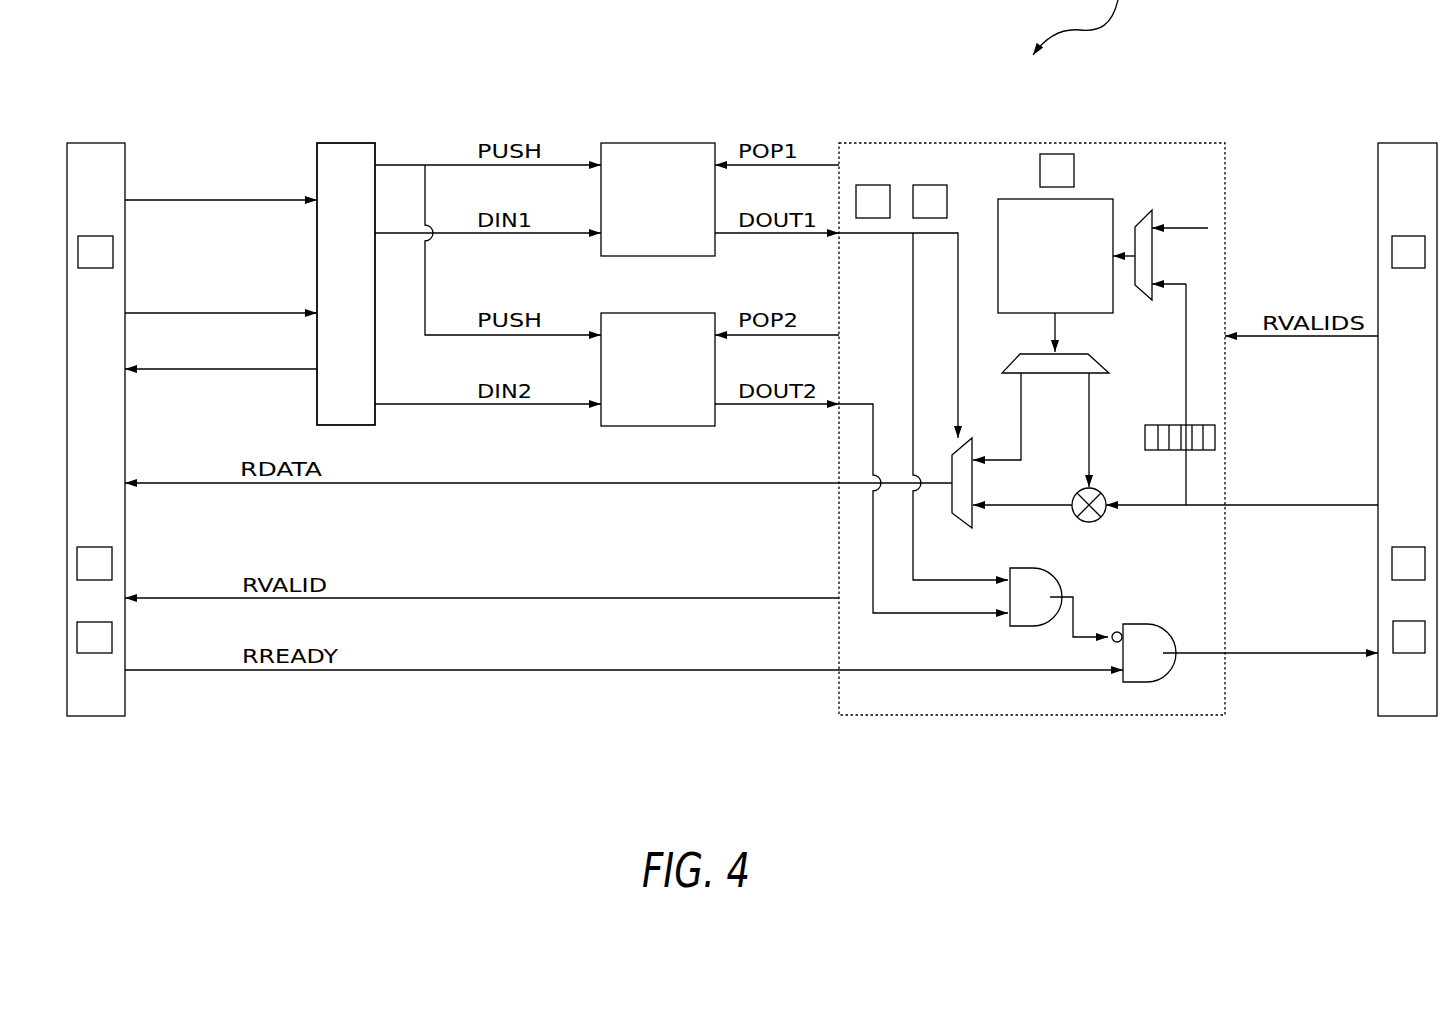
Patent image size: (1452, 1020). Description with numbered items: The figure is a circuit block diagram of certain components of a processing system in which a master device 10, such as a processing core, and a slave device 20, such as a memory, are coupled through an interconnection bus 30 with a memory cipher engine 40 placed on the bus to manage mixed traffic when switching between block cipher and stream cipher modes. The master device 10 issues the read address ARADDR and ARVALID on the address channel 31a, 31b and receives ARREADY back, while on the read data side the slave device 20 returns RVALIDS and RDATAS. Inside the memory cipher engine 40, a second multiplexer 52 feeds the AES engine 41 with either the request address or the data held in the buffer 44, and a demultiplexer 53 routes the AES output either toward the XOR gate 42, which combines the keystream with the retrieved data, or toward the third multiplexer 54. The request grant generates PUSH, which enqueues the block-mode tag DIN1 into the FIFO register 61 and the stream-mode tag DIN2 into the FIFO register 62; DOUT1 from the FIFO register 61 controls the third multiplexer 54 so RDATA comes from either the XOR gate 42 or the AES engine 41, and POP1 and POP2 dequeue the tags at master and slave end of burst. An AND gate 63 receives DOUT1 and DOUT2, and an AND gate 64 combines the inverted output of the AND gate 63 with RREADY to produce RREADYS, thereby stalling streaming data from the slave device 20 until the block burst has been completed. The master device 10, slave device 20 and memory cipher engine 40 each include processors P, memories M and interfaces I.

The master device 10 is at (93, 695).
The slave device 20 is at (1408, 695).
The interconnection bus 30 is at (268, 747).
The address channel 31a is at (346, 284).
The address channel 31b is at (346, 284).
The memory cipher engine 40 is at (893, 715).
The AES engine 41 is at (1055, 256).
The XOR gate 42 is at (1089, 522).
The buffer 44 is at (1215, 437).
The second multiplexer 52 is at (1145, 210).
The demultiplexer 53 is at (1095, 360).
The third multiplexer 54 is at (968, 525).
The FIFO register 61 is at (658, 199).
The FIFO register 62 is at (658, 369).
The AND gate 63 is at (1017, 627).
The AND gate 64 is at (1137, 682).